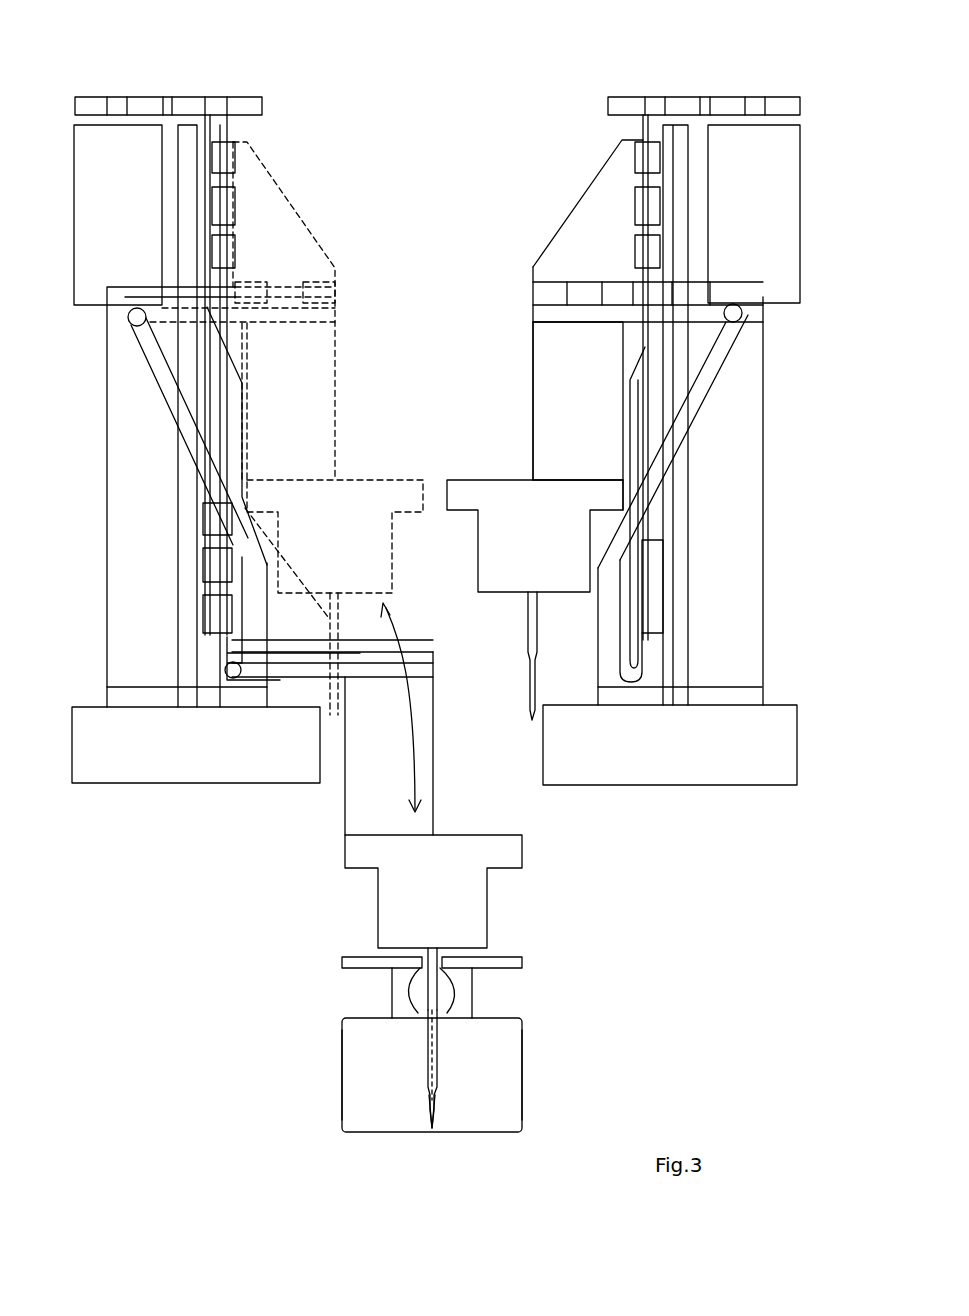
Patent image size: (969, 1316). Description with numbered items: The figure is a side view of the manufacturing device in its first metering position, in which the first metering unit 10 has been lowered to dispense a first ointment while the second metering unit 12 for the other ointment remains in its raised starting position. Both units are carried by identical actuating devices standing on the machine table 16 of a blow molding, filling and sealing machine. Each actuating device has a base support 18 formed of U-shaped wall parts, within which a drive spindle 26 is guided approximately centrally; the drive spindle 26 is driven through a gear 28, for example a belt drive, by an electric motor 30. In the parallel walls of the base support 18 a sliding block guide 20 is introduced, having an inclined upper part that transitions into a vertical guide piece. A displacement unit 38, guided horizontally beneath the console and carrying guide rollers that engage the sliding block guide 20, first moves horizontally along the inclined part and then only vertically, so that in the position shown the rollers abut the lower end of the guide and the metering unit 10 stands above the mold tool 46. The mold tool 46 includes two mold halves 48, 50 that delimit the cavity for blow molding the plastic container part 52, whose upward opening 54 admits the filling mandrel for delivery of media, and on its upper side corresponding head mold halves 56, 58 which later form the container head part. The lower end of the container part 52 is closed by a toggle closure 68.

The first metering unit 10 is at (374, 536).
The second metering unit 12 is at (517, 536).
The machine table 16 is at (145, 748).
The base support 18 is at (140, 522).
The sliding block guide 20 is at (175, 400).
The drive spindle 26 is at (222, 142).
The gear 28 is at (248, 105).
The electric motor 30 is at (146, 235).
The displacement unit 38 is at (303, 408).
The mold tool 46 is at (497, 1112).
The mold half 48 is at (375, 1075).
The mold half 50 is at (500, 1058).
The container part 52 is at (440, 1050).
The opening 54 is at (418, 1013).
The head mold half 56 is at (400, 983).
The head mold half 58 is at (463, 992).
The toggle closure 68 is at (428, 1112).